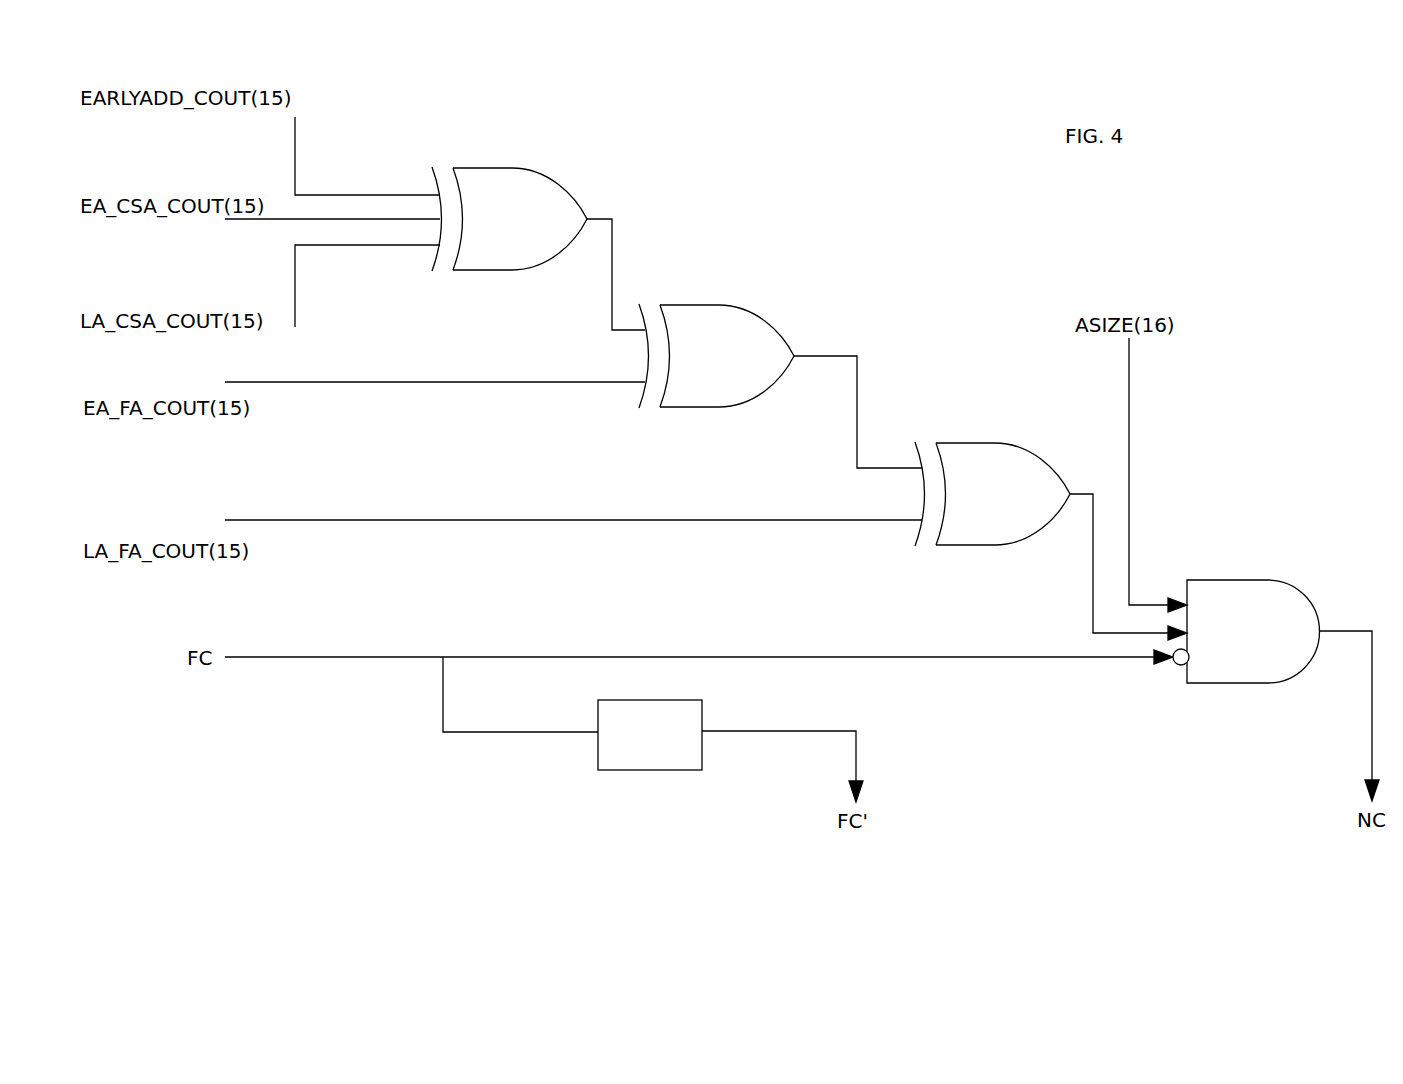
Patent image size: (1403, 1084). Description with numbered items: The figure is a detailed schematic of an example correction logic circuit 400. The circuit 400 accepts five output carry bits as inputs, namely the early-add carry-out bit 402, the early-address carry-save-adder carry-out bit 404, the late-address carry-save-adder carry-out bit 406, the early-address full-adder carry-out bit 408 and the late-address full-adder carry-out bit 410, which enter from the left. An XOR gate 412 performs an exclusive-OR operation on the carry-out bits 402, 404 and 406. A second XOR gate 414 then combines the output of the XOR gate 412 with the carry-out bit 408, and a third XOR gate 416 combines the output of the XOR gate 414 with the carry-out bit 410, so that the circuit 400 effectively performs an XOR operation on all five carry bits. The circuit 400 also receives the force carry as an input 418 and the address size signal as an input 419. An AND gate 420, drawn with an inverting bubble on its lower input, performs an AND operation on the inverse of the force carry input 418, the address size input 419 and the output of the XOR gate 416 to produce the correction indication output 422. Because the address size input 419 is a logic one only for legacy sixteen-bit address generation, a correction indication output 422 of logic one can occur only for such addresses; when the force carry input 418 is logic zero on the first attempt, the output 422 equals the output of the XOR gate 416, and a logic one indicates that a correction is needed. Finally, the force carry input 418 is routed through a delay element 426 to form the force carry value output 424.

The correction logic circuit 400 is at (930, 230).
The EARLYADD_COUT(15) 402 is at (312, 195).
The EA_CSA_COUT(15) 404 is at (260, 219).
The LA_CSA_COUT(15) 406 is at (313, 245).
The EA_FA_COUT(15) 408 is at (297, 382).
The LA_FA_COUT(15) 410 is at (297, 520).
The XOR gate 412 is at (512, 168).
The XOR gate 414 is at (720, 305).
The XOR gate 416 is at (995, 443).
The force carry input 418 is at (297, 657).
The ASIZE(16) input 419 is at (1129, 388).
The AND gate 420 is at (1252, 580).
The correction indication output 422 is at (1345, 633).
The force carry value output 424 is at (820, 731).
The delay element 426 is at (702, 700).